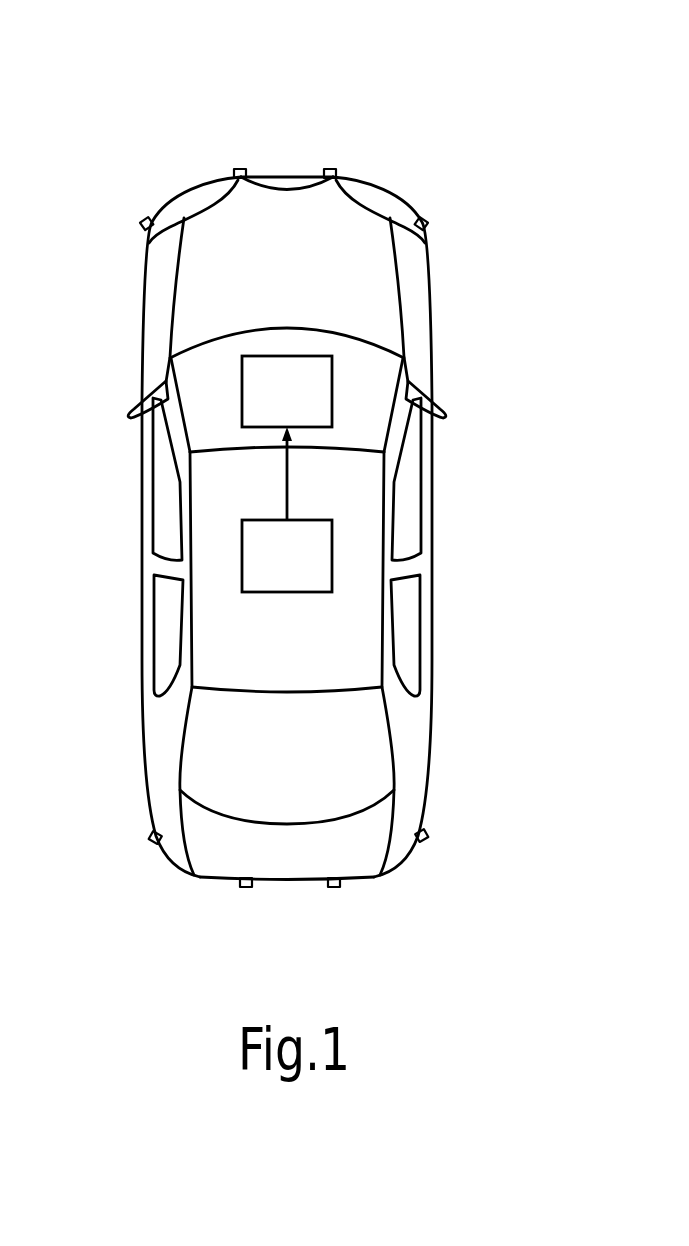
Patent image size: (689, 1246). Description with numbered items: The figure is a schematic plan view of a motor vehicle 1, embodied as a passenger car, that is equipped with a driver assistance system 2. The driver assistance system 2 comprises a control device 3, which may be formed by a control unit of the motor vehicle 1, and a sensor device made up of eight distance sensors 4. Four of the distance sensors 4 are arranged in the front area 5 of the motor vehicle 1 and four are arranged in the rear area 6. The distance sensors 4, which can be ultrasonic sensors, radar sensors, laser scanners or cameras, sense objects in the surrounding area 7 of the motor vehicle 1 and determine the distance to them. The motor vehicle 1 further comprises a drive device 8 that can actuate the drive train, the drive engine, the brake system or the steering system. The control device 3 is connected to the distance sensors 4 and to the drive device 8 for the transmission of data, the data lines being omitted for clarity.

The motor vehicle 1 is at (287, 176).
The driver assistance system 2 is at (212, 490).
The control device 3 is at (317, 545).
The distance sensors 4 is at (239, 169).
The front area 5 is at (356, 88).
The rear area 6 is at (282, 926).
The surrounding area 7 is at (87, 381).
The drive device 8 is at (318, 378).